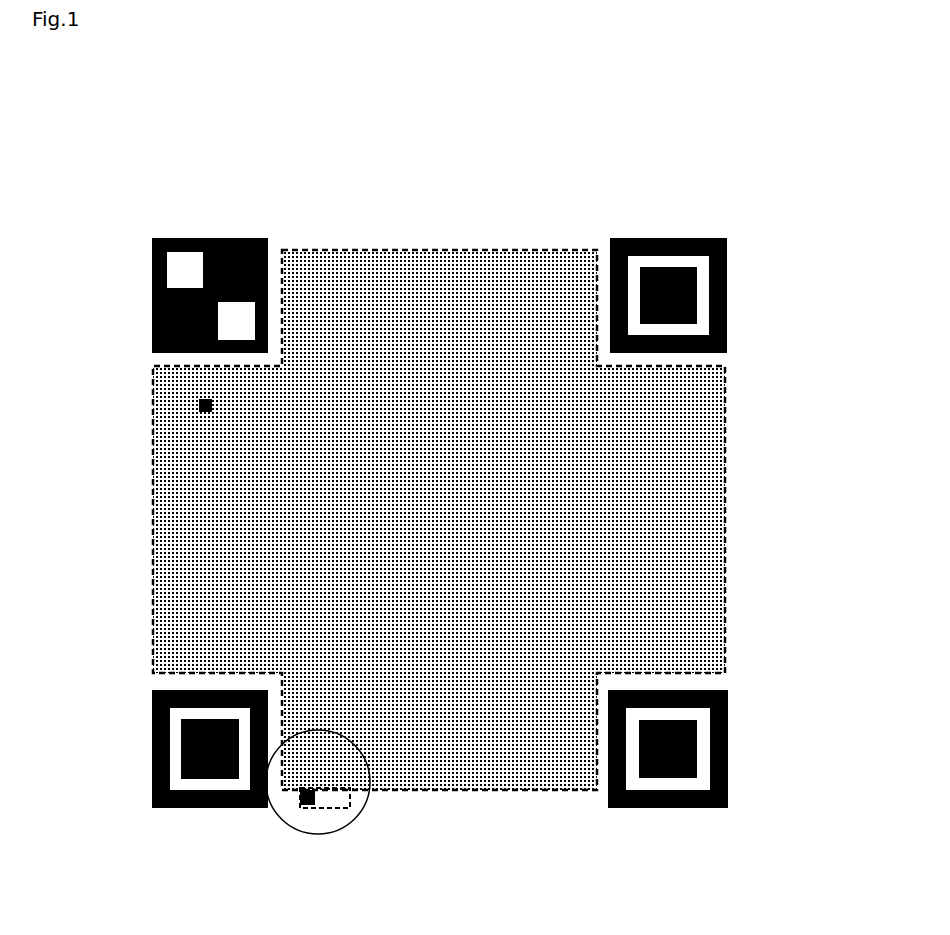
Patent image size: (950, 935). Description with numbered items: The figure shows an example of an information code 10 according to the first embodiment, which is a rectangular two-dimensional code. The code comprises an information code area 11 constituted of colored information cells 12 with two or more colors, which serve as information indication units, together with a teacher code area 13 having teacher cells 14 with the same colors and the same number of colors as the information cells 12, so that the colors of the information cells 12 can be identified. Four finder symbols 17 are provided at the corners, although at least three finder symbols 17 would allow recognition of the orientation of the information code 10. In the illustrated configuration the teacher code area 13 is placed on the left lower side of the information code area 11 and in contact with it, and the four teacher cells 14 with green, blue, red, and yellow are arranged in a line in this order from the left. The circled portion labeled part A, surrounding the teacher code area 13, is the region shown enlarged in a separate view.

The information code 10 is at (443, 474).
The information code area 11 is at (153, 508).
The information cell 12 is at (205, 406).
The teacher code area 13 is at (335, 808).
The teacher cell 14 is at (305, 803).
The finder symbol 17 is at (688, 750).
The part A is at (365, 812).